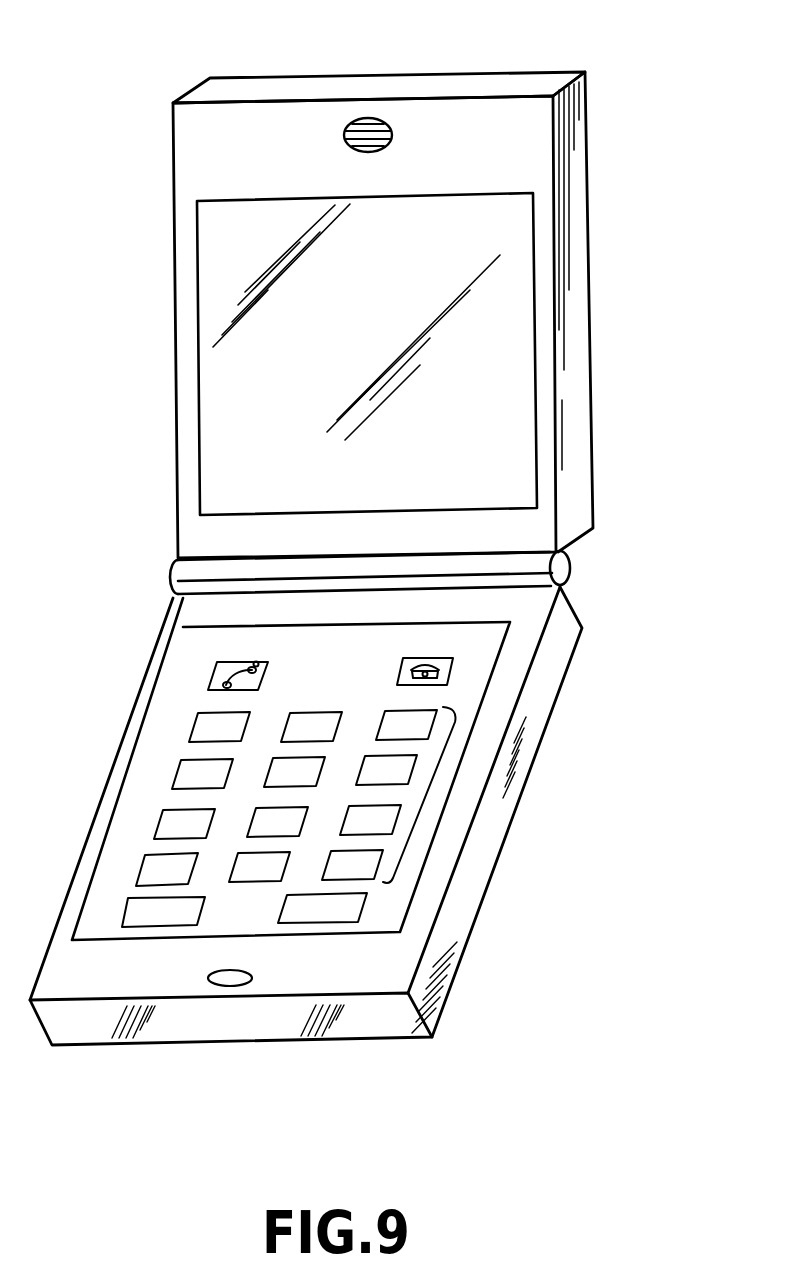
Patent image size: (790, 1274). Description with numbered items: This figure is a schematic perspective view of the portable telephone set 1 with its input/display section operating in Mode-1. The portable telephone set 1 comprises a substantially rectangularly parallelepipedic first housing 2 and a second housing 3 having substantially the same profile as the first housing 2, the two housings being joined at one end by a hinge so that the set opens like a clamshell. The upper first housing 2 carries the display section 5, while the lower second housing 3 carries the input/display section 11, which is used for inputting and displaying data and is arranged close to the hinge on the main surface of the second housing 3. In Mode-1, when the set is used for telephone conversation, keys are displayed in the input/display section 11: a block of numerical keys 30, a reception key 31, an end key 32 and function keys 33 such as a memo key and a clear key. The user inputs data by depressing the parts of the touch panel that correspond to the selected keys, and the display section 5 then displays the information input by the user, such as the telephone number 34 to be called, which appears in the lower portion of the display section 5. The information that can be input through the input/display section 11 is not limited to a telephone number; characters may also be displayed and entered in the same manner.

The portable telephone set 1 is at (238, 63).
The first housing 2 is at (572, 317).
The second housing 3 is at (167, 622).
The display section 5 is at (503, 222).
The input/display section 11 is at (480, 640).
The numerical keys 30 is at (433, 800).
The reception key 31 is at (218, 668).
The end key 32 is at (453, 667).
The function keys 33 is at (340, 923).
The telephone number 34 is at (502, 453).